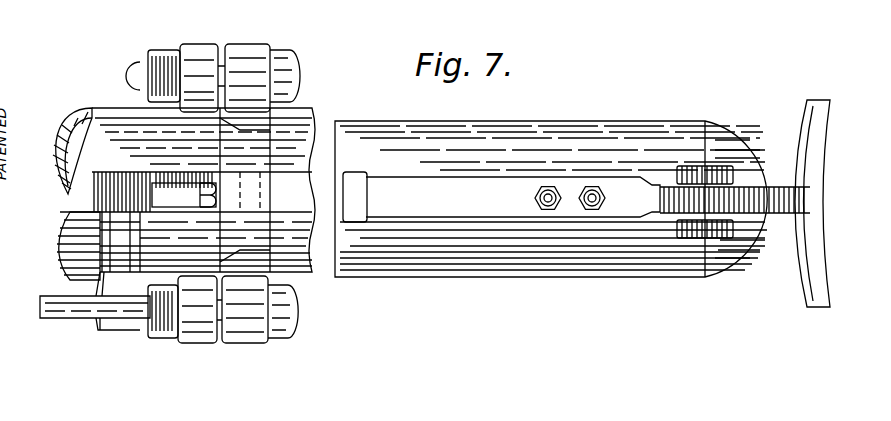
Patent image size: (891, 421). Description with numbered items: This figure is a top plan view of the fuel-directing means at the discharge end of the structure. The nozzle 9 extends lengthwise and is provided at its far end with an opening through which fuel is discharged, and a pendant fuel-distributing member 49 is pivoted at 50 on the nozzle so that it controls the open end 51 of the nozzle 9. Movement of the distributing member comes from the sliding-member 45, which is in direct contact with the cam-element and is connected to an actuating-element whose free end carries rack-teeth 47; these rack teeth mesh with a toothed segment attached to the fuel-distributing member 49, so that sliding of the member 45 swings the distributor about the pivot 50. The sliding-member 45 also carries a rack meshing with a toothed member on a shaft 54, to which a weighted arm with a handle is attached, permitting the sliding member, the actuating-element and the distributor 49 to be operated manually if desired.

The nozzle 9 is at (656, 270).
The sliding-member 45 is at (171, 174).
The rack-teeth 47 is at (666, 186).
The pendant fuel-distributing member 49 is at (824, 142).
The pivot 50 is at (722, 172).
The open end of the nozzle 51 is at (744, 262).
The shaft 54 is at (134, 246).